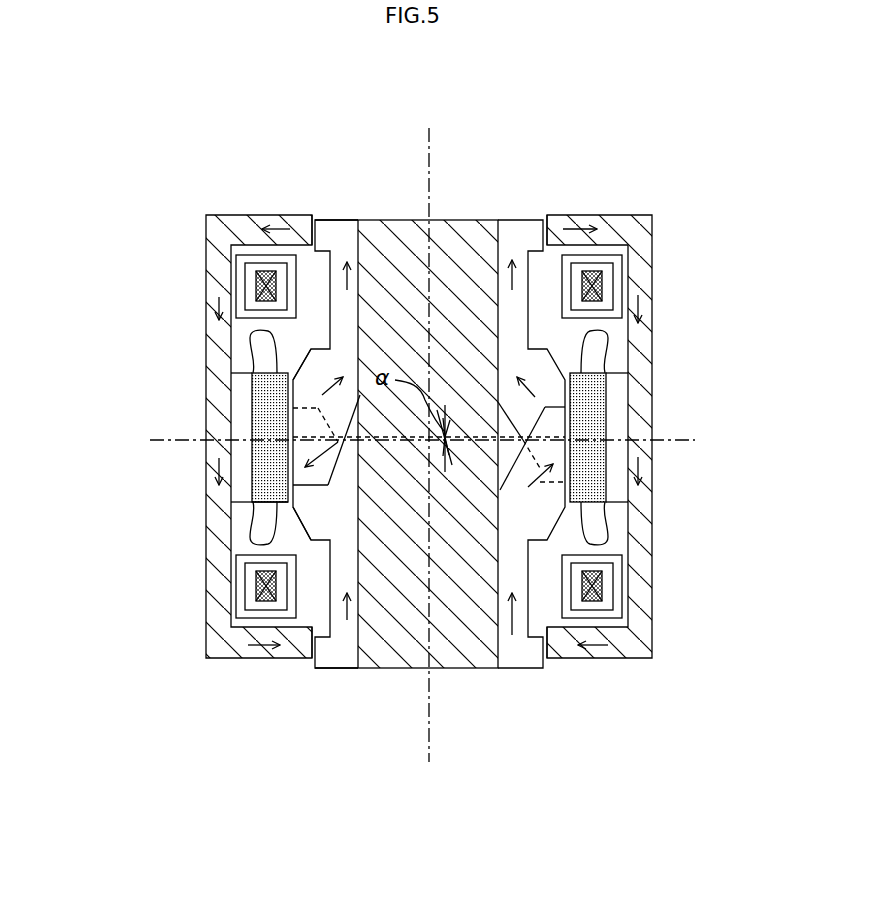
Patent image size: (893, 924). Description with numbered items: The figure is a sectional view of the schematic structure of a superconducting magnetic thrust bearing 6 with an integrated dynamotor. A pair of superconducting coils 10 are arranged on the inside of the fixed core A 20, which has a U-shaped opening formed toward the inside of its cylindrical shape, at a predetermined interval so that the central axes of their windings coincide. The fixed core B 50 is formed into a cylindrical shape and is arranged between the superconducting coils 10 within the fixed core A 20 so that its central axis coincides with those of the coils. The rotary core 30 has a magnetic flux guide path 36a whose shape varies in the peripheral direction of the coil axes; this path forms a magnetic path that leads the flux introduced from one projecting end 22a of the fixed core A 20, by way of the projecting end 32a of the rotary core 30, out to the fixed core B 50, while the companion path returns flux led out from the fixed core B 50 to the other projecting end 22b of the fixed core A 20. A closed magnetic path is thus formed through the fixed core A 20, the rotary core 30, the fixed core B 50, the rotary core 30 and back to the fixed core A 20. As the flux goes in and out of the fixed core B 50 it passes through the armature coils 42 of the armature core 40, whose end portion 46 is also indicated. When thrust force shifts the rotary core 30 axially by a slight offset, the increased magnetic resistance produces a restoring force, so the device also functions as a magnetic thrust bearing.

The superconducting magnetic thrust bearing 6 is at (462, 197).
The superconducting coil 10 is at (236, 265).
The fixed core A 20 is at (220, 214).
The projecting end 22a is at (319, 668).
The projecting end 22b is at (316, 220).
The rotary core 30 is at (358, 207).
The projecting end 32a is at (335, 219).
The magnetic flux guide path 36a is at (340, 355).
The armature core 40 is at (238, 398).
The armature coil 42 is at (250, 528).
The magnet end portion 46 is at (250, 487).
The fixed core B 50 is at (250, 431).